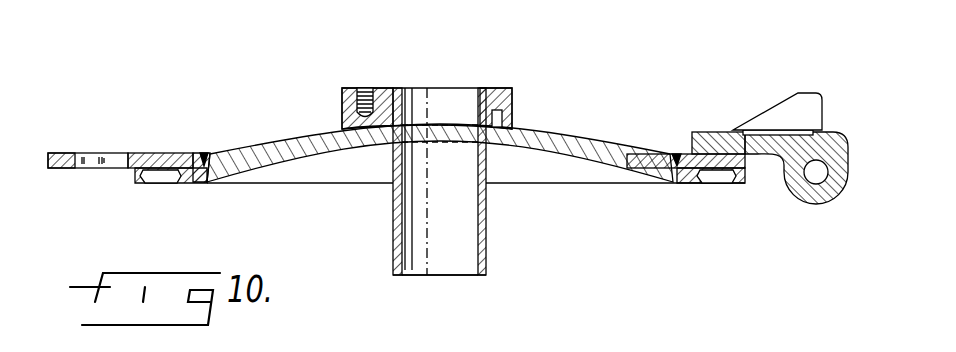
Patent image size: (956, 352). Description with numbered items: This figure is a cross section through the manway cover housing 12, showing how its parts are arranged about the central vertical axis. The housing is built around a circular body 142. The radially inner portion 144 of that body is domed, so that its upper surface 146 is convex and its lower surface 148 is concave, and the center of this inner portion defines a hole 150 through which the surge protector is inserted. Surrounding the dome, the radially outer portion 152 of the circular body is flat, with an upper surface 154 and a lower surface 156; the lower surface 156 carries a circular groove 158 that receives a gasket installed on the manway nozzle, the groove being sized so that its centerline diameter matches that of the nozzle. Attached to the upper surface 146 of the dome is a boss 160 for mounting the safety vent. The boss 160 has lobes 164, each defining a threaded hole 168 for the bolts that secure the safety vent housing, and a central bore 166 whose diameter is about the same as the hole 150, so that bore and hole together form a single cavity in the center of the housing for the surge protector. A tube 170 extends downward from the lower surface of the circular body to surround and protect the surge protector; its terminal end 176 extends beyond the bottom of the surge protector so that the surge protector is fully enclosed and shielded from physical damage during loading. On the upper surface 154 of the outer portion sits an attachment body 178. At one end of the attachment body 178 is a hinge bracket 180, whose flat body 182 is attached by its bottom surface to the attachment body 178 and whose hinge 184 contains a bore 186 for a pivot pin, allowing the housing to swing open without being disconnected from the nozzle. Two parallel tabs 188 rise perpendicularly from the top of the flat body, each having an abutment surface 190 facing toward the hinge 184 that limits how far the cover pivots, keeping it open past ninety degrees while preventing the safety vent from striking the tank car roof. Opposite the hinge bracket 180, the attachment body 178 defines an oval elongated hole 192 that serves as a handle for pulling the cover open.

The manway cover housing 12 is at (548, 87).
The circular body 142 is at (538, 123).
The radially inner portion of the circular body 144 is at (320, 140).
The upper surface of the inner circular body 146 is at (605, 141).
The lower surface of the inner circular body 148 is at (613, 163).
The hole 150 is at (467, 133).
The radially outer portion of the circular body 152 is at (203, 158).
The upper surface of the outer circular body 154 is at (167, 153).
The lower surface of the outer circular body 156 is at (198, 183).
The circular groove 158 is at (163, 183).
The boss 160 is at (556, 26).
The lobes 164 is at (350, 88).
The bore 166 is at (445, 93).
The threaded hole 168 is at (366, 88).
The tube 170 is at (393, 240).
The terminal end of the tube 176 is at (481, 276).
The attachment body 178 is at (153, 153).
The hinge bracket 180 is at (700, 131).
The flat body 182 is at (723, 132).
The hinge 184 is at (818, 204).
The bore 186 is at (822, 178).
The tabs 188 is at (782, 105).
The abutment surface 190 is at (822, 122).
The elongated hole 192 is at (98, 153).